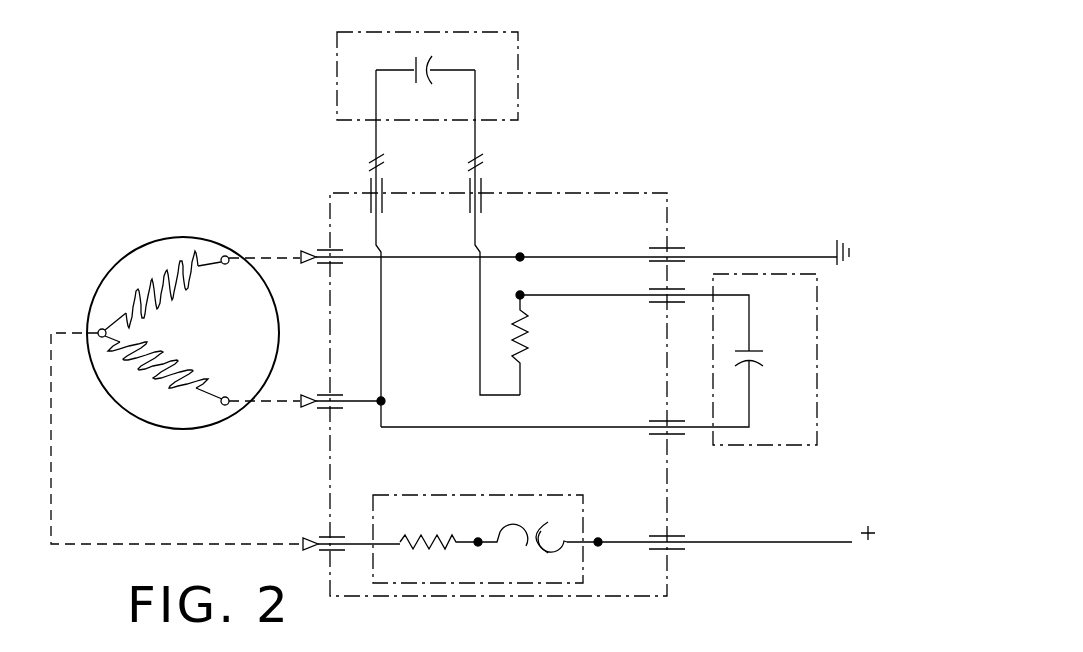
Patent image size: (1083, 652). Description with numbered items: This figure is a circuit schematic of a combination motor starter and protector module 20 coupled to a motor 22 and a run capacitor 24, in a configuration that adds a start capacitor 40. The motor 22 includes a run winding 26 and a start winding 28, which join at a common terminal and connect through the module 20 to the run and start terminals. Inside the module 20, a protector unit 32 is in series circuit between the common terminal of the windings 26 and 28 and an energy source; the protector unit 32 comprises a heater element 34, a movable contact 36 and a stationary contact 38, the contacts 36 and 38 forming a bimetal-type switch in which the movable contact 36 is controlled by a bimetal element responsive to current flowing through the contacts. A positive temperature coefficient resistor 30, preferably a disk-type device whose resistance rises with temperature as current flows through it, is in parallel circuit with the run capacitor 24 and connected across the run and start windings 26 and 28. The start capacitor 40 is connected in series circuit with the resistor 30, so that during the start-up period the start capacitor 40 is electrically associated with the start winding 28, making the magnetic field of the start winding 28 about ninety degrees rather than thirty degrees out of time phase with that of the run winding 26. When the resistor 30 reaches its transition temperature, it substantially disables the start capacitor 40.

The combination starter and protector module 20 is at (606, 193).
The motor 22 is at (156, 240).
The run capacitor 24 is at (817, 366).
The run winding 26 is at (172, 305).
The start winding 28 is at (182, 359).
The positive temperature coefficient resistor 30 is at (531, 349).
The protector unit 32 is at (475, 495).
The heater element 34 is at (433, 531).
The movable contact 36 is at (512, 523).
The stationary contact 38 is at (541, 556).
The start capacitor 40 is at (520, 86).